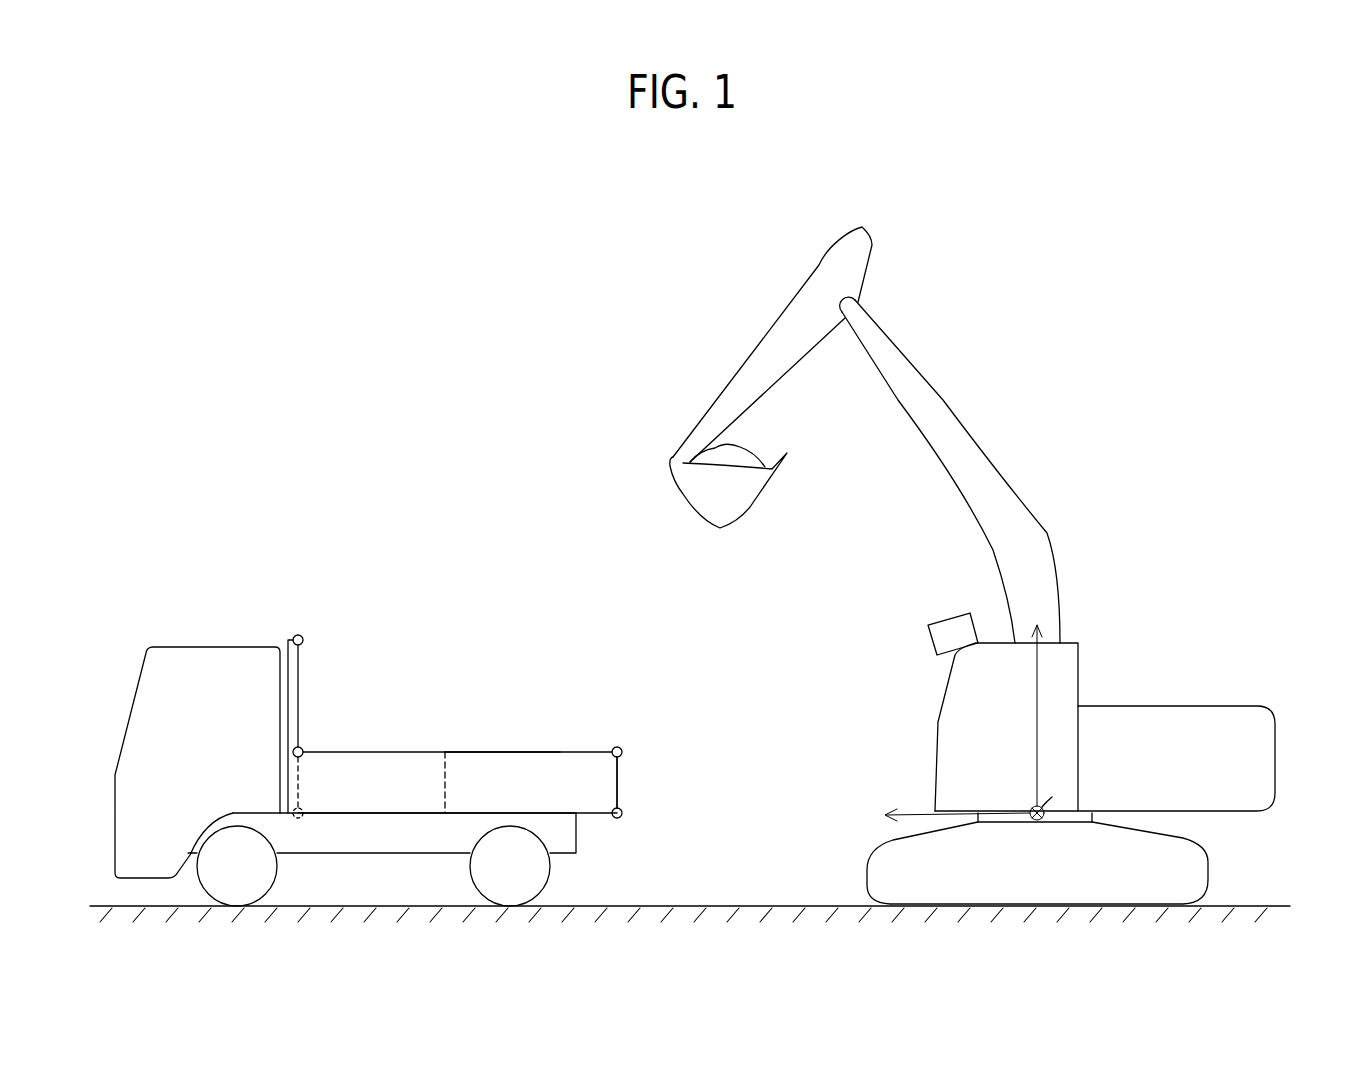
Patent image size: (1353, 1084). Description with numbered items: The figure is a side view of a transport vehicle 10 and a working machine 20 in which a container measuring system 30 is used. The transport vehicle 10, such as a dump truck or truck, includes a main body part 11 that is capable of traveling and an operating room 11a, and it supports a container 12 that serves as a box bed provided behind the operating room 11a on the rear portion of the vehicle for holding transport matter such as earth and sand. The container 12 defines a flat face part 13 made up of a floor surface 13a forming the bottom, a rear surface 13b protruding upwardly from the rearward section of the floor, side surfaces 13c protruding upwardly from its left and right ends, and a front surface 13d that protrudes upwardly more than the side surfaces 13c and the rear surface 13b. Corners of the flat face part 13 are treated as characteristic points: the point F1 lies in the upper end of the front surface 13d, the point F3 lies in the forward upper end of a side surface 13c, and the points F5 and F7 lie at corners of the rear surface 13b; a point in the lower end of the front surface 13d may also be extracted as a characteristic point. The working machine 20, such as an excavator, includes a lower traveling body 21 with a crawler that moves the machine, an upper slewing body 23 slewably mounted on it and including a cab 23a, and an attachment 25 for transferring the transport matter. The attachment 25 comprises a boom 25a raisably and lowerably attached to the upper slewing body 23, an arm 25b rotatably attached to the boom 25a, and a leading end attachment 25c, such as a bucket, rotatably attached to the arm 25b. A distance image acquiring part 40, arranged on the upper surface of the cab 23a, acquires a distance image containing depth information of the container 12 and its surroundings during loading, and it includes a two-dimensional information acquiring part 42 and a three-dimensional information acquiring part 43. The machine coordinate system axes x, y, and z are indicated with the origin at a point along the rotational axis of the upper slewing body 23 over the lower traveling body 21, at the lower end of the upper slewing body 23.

The transport vehicle 10 is at (456, 563).
The main body part 11 is at (572, 845).
The operating room 11a is at (215, 647).
The container 12 is at (570, 752).
The flat face part 13 is at (504, 720).
The floor surface 13a is at (444, 747).
The rear surface 13b is at (618, 782).
The side surfaces 13c is at (510, 753).
The front surface 13d is at (300, 675).
The characteristic point F1 is at (302, 636).
The characteristic point F3 is at (302, 748).
The characteristic point F5 is at (621, 749).
The characteristic point F7 is at (621, 816).
The working machine 20 is at (638, 245).
The lower traveling body 21 is at (1208, 867).
The upper slewing body 23 is at (1275, 767).
The cab 23a is at (1077, 643).
The attachment 25 is at (1105, 437).
The boom 25a is at (958, 478).
The arm 25b is at (792, 367).
The leading end attachment 25c is at (723, 525).
The container measuring system 30 is at (873, 634).
The distance image acquiring part 40 is at (873, 634).
The two-dimensional information acquiring part 42 is at (873, 634).
The three-dimensional information acquiring part 43 is at (929, 632).